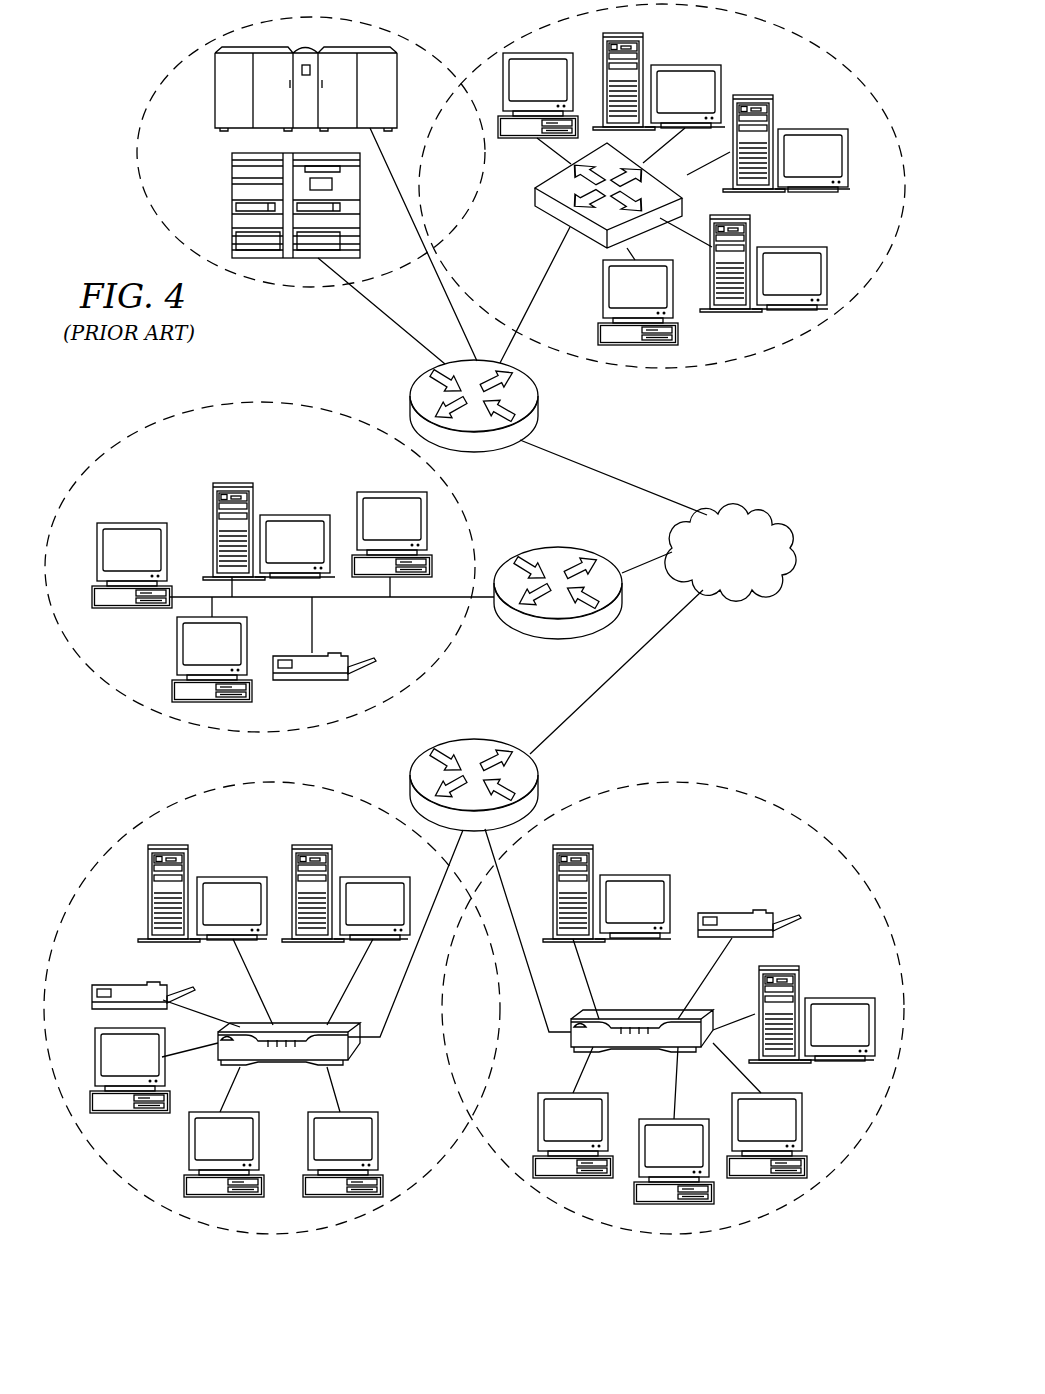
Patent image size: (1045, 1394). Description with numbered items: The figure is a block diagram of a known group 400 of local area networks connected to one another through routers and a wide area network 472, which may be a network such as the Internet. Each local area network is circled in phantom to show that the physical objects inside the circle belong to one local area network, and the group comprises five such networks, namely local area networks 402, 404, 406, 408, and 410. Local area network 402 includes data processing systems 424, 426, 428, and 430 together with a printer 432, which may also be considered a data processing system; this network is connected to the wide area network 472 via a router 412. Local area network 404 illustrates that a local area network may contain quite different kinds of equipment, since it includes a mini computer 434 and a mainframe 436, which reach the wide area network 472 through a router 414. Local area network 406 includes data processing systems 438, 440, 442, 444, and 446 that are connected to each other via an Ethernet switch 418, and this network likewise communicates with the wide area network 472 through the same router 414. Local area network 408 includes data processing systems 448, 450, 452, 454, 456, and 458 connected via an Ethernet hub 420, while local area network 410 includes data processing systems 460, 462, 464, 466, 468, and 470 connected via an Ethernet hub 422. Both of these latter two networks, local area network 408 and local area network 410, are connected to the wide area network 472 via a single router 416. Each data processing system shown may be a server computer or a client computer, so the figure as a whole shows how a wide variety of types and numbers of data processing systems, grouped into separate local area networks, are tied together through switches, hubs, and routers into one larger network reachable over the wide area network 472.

The group of local area networks 400 is at (105, 60).
The local area network 402 is at (108, 442).
The local area network 404 is at (290, 288).
The local area network 406 is at (792, 347).
The local area network 408 is at (753, 795).
The local area network 410 is at (178, 800).
The router 412 is at (558, 548).
The router 414 is at (413, 382).
The router 416 is at (472, 738).
The Ethernet switch 418 is at (535, 222).
The Ethernet hub 420 is at (634, 1012).
The Ethernet hub 422 is at (293, 1023).
The data processing system 424 is at (232, 483).
The data processing system 426 is at (355, 507).
The data processing system 428 is at (128, 523).
The data processing system 430 is at (177, 647).
The printer 432 is at (297, 652).
The mini computer 434 is at (215, 113).
The mainframe 436 is at (232, 178).
The data processing system 438 is at (525, 139).
The data processing system 440 is at (687, 63).
The data processing system 442 is at (813, 127).
The data processing system 444 is at (798, 247).
The data processing system 446 is at (680, 333).
The data processing system 448 is at (635, 873).
The data processing system 450 is at (745, 910).
The data processing system 452 is at (837, 998).
The data processing system 454 is at (807, 1117).
The data processing system 456 is at (688, 1119).
The data processing system 458 is at (559, 1093).
The data processing system 460 is at (377, 873).
The data processing system 462 is at (233, 873).
The data processing system 464 is at (127, 982).
The data processing system 466 is at (127, 1115).
The data processing system 468 is at (207, 1112).
The data processing system 470 is at (365, 1112).
The wide area network 472 is at (790, 543).